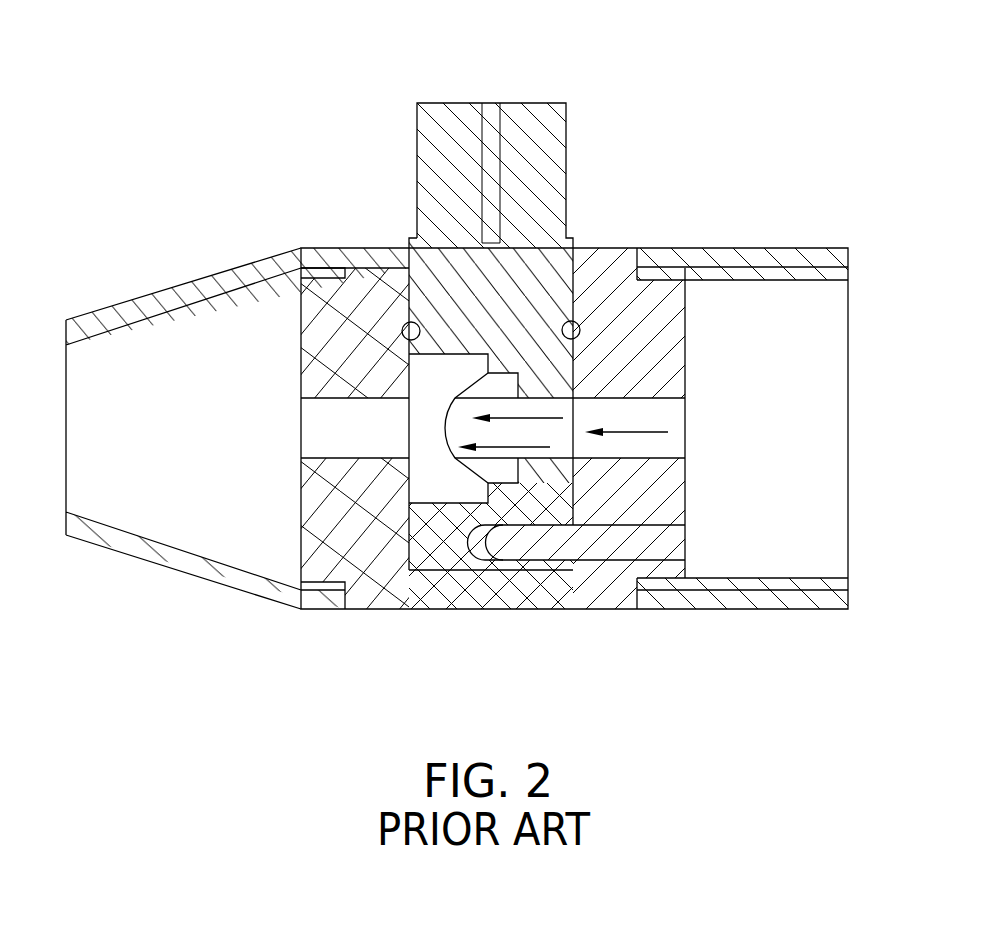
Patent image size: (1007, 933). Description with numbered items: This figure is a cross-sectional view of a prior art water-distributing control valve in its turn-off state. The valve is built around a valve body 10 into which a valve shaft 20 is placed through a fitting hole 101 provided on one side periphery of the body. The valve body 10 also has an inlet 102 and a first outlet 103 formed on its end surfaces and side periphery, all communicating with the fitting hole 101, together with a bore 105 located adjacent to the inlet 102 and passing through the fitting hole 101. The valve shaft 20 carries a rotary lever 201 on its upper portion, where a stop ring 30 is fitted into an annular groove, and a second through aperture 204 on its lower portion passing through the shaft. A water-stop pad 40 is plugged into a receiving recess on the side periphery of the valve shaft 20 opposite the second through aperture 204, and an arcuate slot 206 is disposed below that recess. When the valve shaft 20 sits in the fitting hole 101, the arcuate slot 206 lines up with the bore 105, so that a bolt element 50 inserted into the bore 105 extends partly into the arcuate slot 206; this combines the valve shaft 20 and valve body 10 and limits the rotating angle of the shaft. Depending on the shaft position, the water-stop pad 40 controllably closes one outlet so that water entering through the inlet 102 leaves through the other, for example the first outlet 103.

The valve body 10 is at (618, 248).
The valve shaft 20 is at (568, 112).
The stop ring 30 is at (405, 417).
The water-stop pad 40 is at (405, 417).
The bolt element 50 is at (596, 568).
The fitting hole 101 is at (407, 325).
The inlet 102 is at (677, 423).
The first outlet 103 is at (301, 583).
The bore 105 is at (673, 588).
The rotary lever 201 is at (483, 112).
The second through aperture 204 is at (697, 280).
The arcuate slot 206 is at (485, 545).